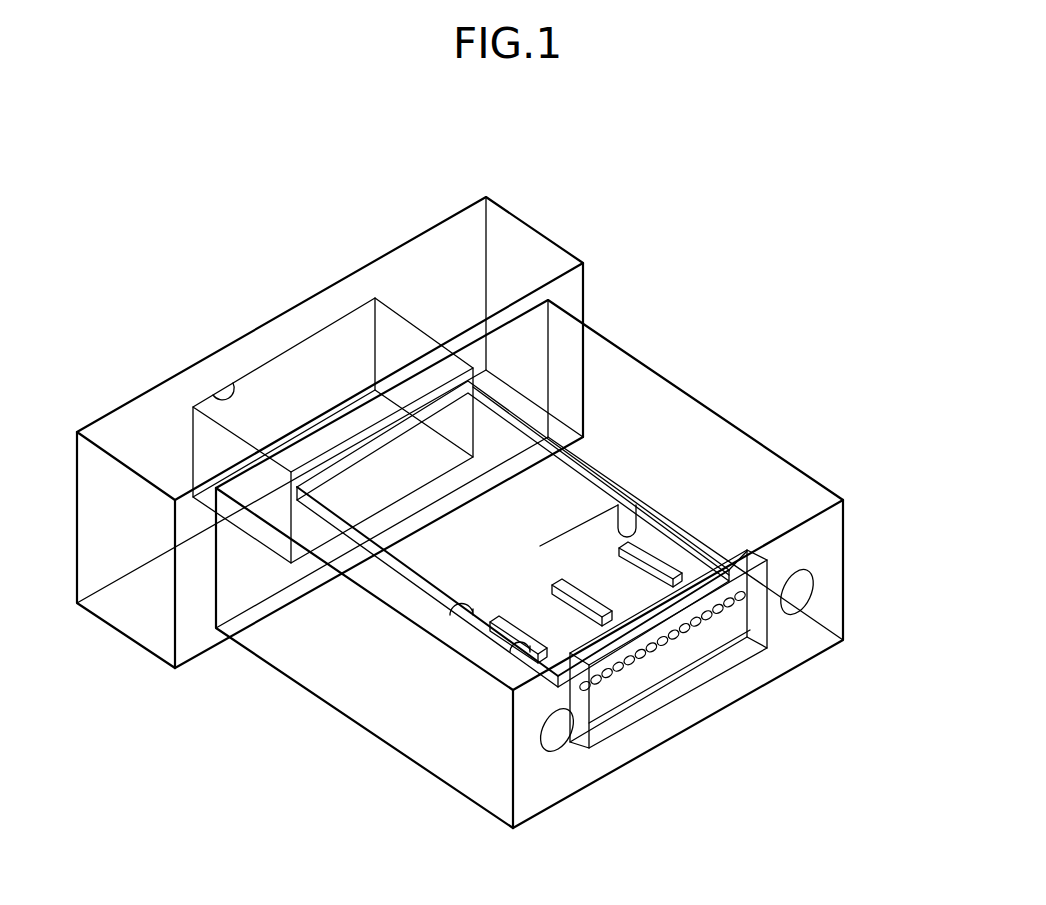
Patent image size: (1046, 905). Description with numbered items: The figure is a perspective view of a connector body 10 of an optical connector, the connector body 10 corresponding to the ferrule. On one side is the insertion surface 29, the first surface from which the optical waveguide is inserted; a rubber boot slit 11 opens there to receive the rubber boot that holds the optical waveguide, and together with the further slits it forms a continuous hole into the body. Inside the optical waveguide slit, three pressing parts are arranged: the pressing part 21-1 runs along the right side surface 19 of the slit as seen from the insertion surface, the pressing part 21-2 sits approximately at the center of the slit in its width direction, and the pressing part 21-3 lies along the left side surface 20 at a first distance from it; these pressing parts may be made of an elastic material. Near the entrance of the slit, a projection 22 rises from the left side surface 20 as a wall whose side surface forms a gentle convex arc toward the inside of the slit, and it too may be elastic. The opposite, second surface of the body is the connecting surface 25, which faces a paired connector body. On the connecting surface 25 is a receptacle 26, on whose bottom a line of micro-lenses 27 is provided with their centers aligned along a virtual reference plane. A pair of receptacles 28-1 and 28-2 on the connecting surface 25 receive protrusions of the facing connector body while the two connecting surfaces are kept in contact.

The connector body 10 is at (257, 204).
The rubber boot slit 11 is at (214, 396).
The right side surface 19 is at (462, 606).
The left side surface 20 is at (697, 557).
The pressing part 21-1 is at (503, 650).
The pressing part 21-2 is at (516, 643).
The pressing part 21-3 is at (652, 562).
The projection 22 is at (627, 518).
The connecting surface 25 is at (538, 786).
The receptacle 26 is at (622, 695).
The micro-lenses 27 is at (660, 645).
The receptacle 28-1 is at (558, 731).
The receptacle 28-2 is at (800, 596).
The insertion surface 29 is at (395, 274).